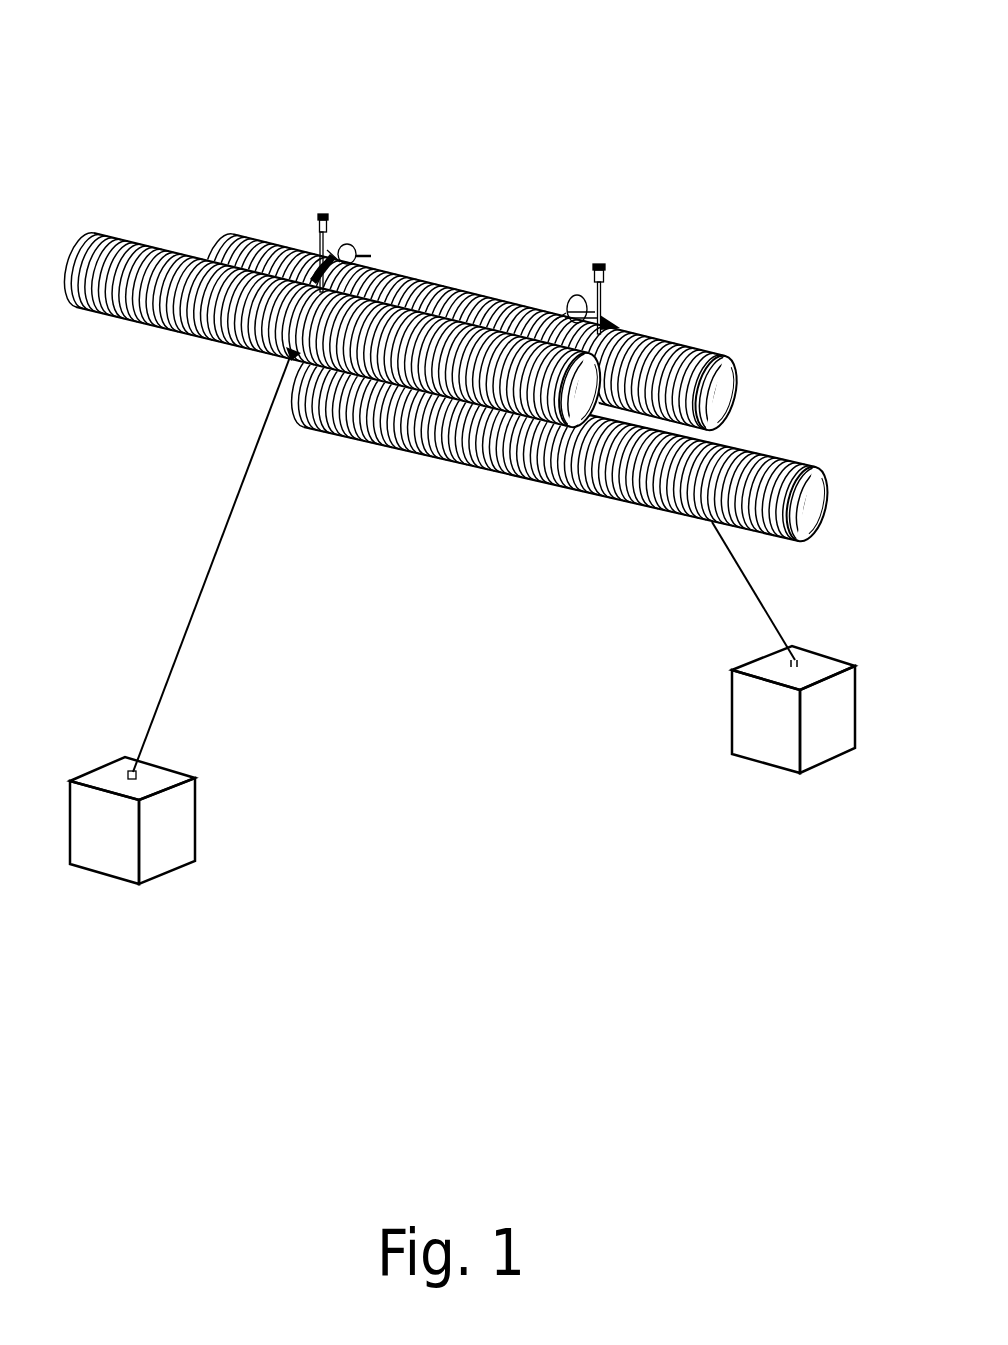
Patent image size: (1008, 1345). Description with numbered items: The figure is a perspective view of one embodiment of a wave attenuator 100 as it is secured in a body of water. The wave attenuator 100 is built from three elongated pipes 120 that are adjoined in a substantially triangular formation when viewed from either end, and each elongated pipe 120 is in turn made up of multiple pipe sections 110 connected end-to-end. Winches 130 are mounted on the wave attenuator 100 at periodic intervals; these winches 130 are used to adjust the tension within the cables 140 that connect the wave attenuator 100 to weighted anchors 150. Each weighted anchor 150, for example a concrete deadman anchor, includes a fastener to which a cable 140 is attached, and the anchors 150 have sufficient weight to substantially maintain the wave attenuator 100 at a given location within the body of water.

The wave attenuator 100 is at (523, 50).
The pipe section 110 is at (762, 450).
The elongated pipe 120 is at (727, 283).
The winch 130 is at (306, 230).
The cable 140 is at (213, 549).
The weighted anchor 150 is at (197, 792).